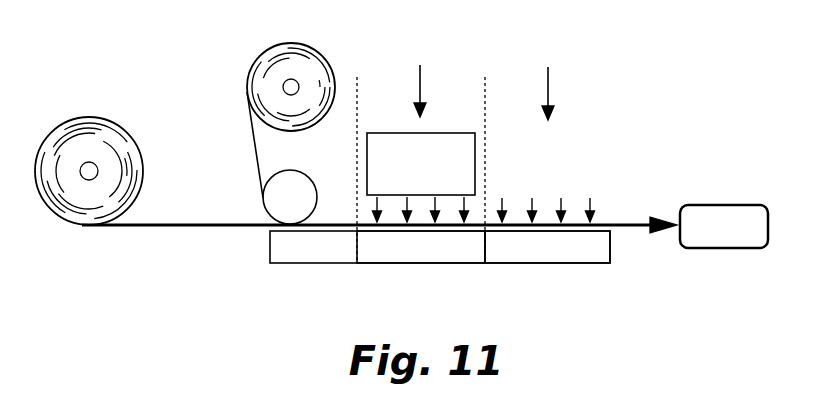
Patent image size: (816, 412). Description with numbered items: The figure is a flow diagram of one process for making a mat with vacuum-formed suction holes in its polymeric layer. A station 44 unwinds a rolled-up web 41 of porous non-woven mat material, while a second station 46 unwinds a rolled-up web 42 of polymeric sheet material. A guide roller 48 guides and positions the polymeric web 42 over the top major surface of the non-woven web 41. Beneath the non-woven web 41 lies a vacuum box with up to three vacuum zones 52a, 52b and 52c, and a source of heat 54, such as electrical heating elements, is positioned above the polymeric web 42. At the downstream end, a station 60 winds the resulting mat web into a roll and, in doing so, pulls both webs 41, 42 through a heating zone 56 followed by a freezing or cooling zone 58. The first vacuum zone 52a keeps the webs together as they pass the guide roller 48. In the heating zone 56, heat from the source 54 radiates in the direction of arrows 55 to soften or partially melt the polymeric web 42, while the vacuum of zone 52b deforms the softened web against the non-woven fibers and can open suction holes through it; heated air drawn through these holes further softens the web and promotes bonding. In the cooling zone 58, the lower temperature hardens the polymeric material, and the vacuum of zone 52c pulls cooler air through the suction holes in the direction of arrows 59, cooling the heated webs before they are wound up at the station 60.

The web of non-woven material 41 is at (178, 219).
The web of polymeric material 42 is at (253, 152).
The unwinding station 44 is at (122, 138).
The unwinding station 46 is at (287, 43).
The guide roller 48 is at (298, 183).
The first vacuum zone 52a is at (314, 255).
The second vacuum zone 52b is at (428, 255).
The third vacuum zone 52c is at (543, 255).
The source of heat 54 is at (449, 141).
The arrows 55 is at (378, 195).
The heating zone 56 is at (418, 74).
The cooling zone 58 is at (546, 76).
The arrows 59 is at (561, 196).
The winding station 60 is at (718, 210).